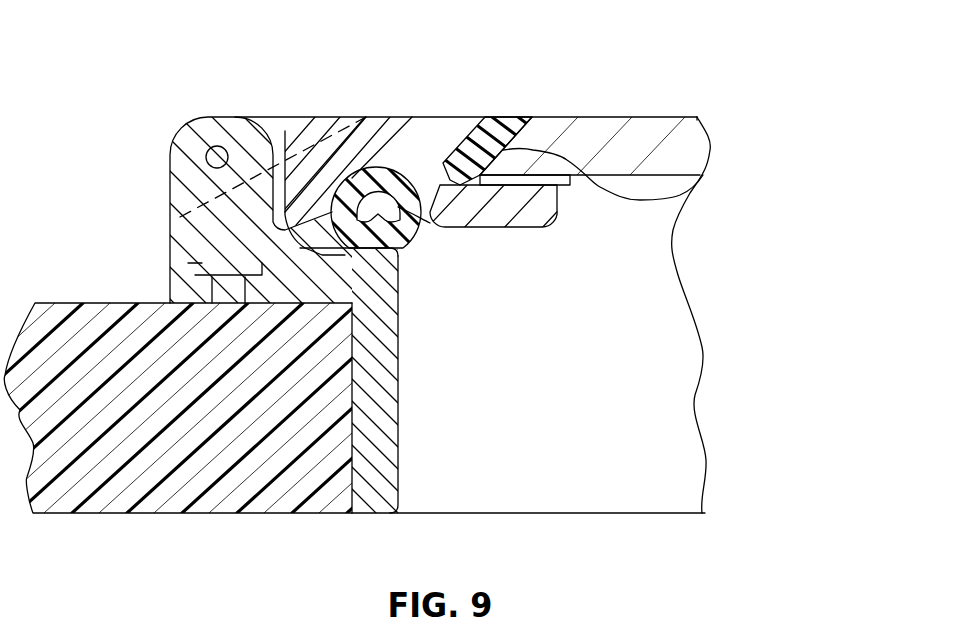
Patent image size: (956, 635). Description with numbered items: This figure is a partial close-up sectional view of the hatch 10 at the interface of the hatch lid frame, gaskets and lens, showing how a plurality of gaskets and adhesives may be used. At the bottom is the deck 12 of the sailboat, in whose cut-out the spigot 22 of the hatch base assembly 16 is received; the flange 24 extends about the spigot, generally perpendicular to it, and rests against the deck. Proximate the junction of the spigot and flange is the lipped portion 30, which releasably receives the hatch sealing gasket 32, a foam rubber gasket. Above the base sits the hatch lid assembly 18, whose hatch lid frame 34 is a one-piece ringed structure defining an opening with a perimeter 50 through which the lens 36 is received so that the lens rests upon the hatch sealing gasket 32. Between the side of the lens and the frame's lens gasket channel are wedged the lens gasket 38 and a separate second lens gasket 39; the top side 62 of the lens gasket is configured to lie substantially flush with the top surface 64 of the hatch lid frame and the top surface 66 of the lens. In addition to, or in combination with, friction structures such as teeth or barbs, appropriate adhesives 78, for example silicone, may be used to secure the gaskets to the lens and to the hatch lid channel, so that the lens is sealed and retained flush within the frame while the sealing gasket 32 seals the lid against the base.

The hatch 10 is at (765, 41).
The deck 12 is at (157, 472).
The hatch base assembly 16 is at (378, 477).
The hatch lid assembly 18 is at (633, 78).
The spigot 22 is at (385, 418).
The flange 24 is at (282, 287).
The lipped portion 30 is at (400, 262).
The hatch sealing gasket 32 is at (382, 178).
The hatch lid frame 34 is at (370, 185).
The lens 36 is at (667, 137).
The lens gasket 38 is at (507, 117).
The lens gasket 39 is at (558, 185).
The perimeter 50 is at (472, 127).
The top side 62 is at (525, 117).
The top surface 64 is at (382, 120).
The top surface 66 is at (655, 115).
The adhesives 78 is at (676, 208).